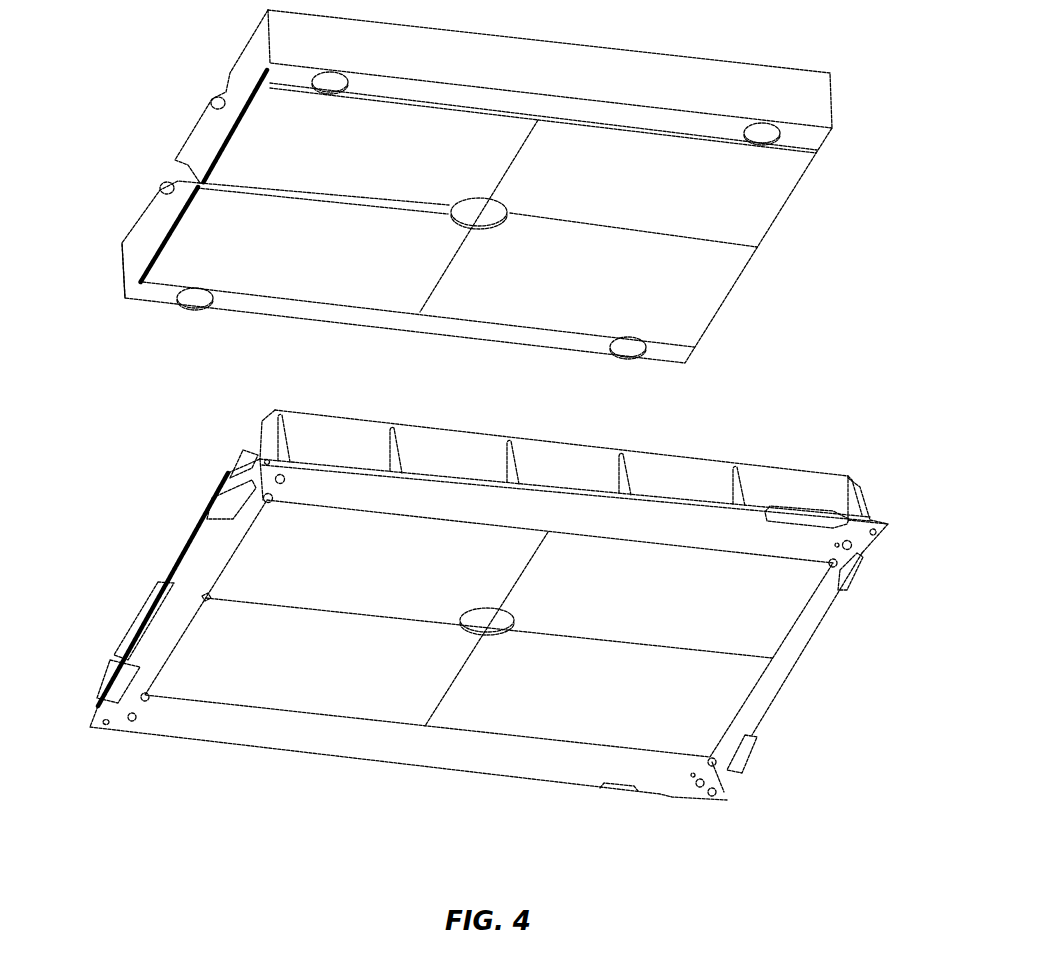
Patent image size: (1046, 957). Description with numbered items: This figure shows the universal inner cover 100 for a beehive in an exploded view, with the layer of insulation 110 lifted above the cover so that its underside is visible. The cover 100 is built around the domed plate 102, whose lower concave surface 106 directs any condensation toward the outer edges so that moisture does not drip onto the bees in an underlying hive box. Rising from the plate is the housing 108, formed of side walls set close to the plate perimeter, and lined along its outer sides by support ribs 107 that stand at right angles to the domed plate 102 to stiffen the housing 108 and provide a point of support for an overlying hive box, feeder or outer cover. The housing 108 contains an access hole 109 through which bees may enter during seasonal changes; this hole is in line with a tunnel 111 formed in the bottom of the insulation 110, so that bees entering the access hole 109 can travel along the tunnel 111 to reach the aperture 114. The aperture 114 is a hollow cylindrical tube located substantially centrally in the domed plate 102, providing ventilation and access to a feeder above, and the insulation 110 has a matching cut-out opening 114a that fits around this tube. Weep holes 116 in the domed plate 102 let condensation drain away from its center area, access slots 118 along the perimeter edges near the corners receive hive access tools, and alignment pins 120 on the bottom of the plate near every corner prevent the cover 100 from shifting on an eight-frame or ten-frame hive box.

The universal inner cover 100 is at (506, 599).
The domed plate 102 is at (397, 598).
The lower concave surface 106 is at (410, 640).
The support ribs 107 is at (160, 585).
The housing 108 is at (703, 482).
The access hole 109 is at (192, 167).
The layer of insulation 110 is at (495, 210).
The tunnel 111 is at (238, 188).
The aperture 114 is at (476, 633).
The cut-out opening 114a is at (482, 212).
The weep holes 116 is at (562, 512).
The access slots 118 is at (800, 510).
The alignment pins 120 is at (278, 480).